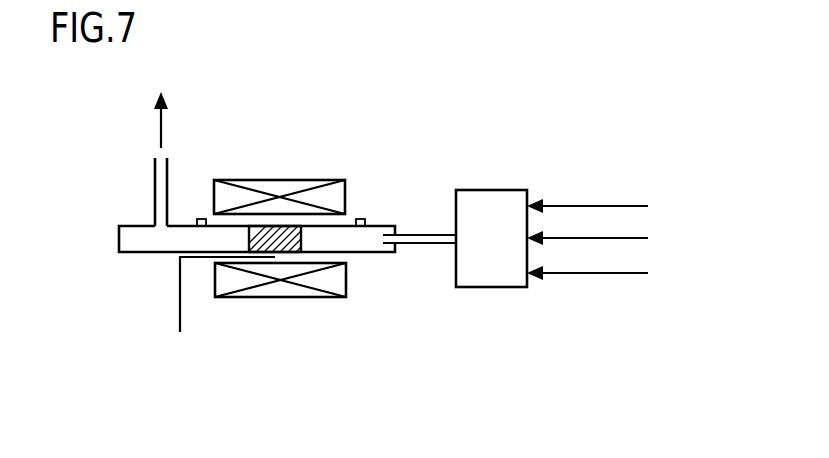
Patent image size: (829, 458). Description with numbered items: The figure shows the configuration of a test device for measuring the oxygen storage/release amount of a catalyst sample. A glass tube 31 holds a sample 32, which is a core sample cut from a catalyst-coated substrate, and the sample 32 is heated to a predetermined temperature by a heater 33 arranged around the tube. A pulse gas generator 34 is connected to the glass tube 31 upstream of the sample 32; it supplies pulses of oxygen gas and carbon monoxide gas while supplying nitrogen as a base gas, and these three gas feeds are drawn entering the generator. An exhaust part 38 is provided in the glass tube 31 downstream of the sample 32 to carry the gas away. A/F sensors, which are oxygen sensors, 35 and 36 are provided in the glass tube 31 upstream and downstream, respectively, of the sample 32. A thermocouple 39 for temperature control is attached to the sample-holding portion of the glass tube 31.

The glass tube 31 is at (390, 226).
The sample 32 is at (275, 226).
The heater 33 is at (283, 297).
The pulse gas generator 34 is at (489, 190).
The A/F sensor (oxygen sensor) 35 is at (360, 219).
The A/F sensor (oxygen sensor) 36 is at (200, 219).
The exhaust part 38 is at (155, 170).
The thermocouple 39 is at (180, 317).